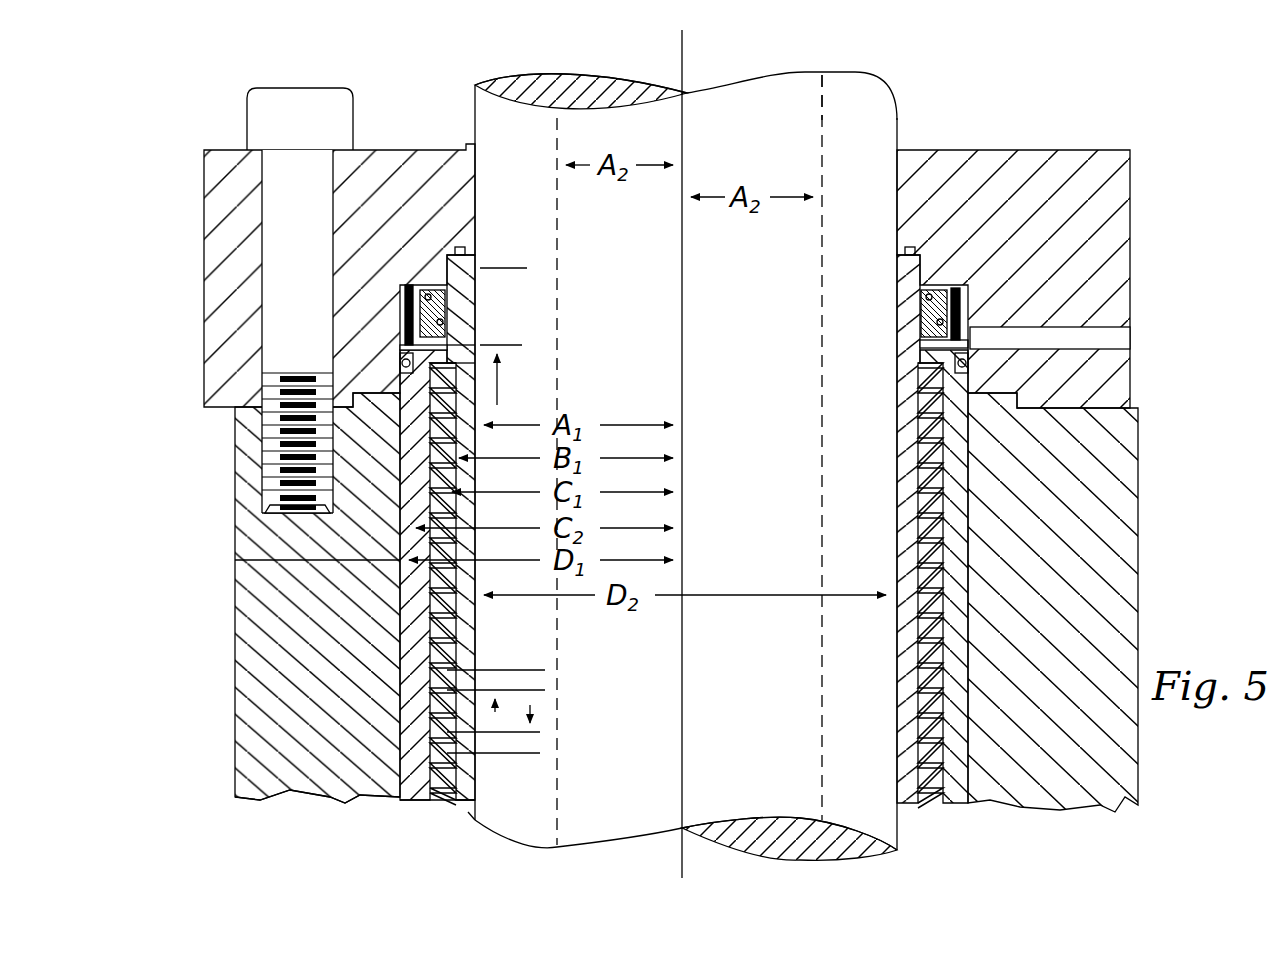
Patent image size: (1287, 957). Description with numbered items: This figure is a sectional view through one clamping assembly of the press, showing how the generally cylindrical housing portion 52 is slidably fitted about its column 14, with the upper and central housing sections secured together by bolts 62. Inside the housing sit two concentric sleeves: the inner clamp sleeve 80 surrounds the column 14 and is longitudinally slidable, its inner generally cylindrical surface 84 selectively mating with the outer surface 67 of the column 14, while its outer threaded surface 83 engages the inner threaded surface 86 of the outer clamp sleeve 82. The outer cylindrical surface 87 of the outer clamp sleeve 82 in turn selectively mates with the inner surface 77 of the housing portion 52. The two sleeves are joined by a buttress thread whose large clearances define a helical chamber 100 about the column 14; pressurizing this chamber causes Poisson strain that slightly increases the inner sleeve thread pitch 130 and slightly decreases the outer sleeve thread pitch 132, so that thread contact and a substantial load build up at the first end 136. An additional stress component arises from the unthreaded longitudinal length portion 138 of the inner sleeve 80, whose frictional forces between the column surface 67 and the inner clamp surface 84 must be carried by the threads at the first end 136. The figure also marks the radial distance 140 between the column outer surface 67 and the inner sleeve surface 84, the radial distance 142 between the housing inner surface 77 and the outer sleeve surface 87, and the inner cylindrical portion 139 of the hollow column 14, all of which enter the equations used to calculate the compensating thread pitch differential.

The column 14 is at (573, 100).
The housing portion 52 is at (212, 488).
The bolts 62 is at (290, 112).
The outer surface of the column 67 is at (458, 793).
The inner surface of the housing portion 77 is at (405, 668).
The inner clamp sleeve 80 is at (460, 345).
The outer clamp sleeve 82 is at (434, 388).
The inner generally cylindrical surface 84 is at (472, 402).
The outer threaded surface 83 is at (400, 772).
The inner threaded surface 86 is at (476, 608).
The outer cylindrical surface 87 is at (400, 587).
The helical chamber 100 is at (478, 632).
The inner sleeve thread pitch 130 is at (504, 645).
The outer sleeve thread pitch 132 is at (530, 762).
The first end 136 is at (404, 346).
The longitudinal length portion 138 is at (493, 259).
The inner cylindrical portion 139 is at (818, 93).
The radial distance 140 is at (468, 824).
The radial distance 142 is at (396, 802).